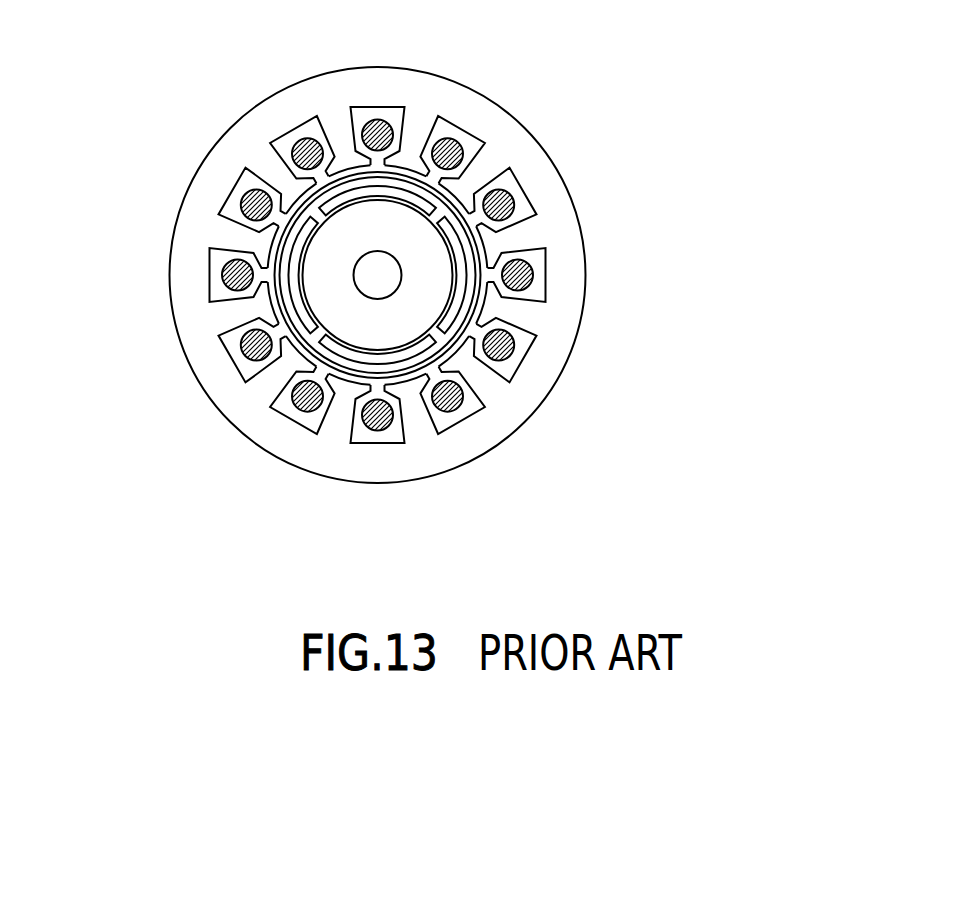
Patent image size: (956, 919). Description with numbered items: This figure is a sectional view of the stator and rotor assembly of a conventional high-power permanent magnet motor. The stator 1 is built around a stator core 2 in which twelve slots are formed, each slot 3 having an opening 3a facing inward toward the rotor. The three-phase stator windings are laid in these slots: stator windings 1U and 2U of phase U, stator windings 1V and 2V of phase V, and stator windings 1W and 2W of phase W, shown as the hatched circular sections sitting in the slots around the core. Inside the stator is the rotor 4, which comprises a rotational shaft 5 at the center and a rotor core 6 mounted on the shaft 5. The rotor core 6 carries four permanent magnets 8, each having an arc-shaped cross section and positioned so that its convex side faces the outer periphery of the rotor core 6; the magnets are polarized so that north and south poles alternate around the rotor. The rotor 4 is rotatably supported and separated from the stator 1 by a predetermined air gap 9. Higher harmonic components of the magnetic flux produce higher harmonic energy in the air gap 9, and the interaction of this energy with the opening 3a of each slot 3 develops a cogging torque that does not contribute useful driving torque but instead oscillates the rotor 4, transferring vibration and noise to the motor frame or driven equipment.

The stator 1 is at (555, 153).
The stator core 2 is at (560, 210).
The slot 3 is at (365, 107).
The opening 3a is at (378, 157).
The rotor 4 is at (272, 242).
The rotational shaft 5 is at (367, 283).
The rotor core 6 is at (324, 329).
The permanent magnet 8 is at (348, 190).
The air gap 9 is at (488, 302).
The stator winding of phase U 1U is at (382, 122).
The stator winding of phase V 1V is at (295, 138).
The stator winding of phase W 1W is at (457, 137).
The stator winding of phase U 2U is at (222, 271).
The stator winding of phase V 2V is at (243, 347).
The stator winding of phase W 2W is at (296, 406).